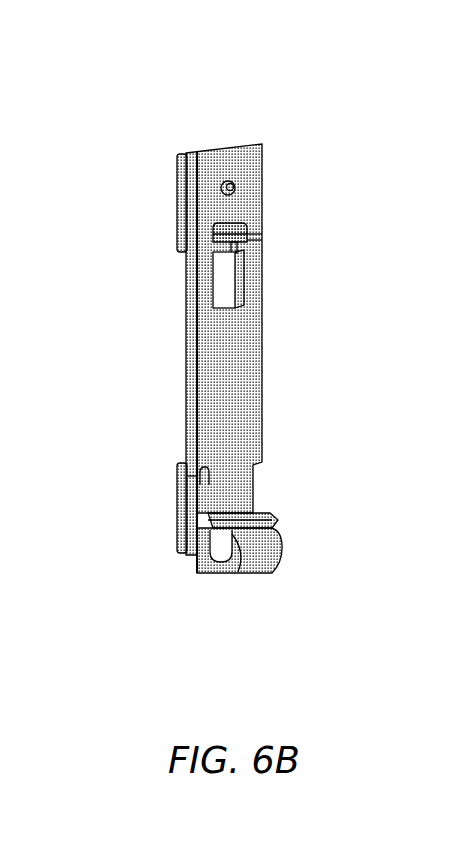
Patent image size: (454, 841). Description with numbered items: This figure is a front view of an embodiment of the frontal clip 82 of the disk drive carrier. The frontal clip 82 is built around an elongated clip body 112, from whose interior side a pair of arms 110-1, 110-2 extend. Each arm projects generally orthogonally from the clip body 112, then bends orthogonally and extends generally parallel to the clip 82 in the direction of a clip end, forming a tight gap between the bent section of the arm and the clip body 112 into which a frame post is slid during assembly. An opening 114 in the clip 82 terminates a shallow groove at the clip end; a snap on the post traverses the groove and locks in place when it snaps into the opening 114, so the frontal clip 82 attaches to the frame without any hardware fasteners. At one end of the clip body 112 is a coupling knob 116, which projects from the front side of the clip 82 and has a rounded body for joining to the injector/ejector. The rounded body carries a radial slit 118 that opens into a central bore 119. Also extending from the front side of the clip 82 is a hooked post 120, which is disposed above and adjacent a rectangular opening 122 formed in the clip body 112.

The frontal clip 82 is at (453, 80).
The arm 110-1 is at (177, 225).
The arm 110-2 is at (178, 493).
The clip body 112 is at (195, 418).
The opening 114 is at (235, 185).
The coupling knob 116 is at (247, 548).
The radial slit 118 is at (272, 520).
The central bore 119 is at (203, 545).
The hooked post 120 is at (256, 242).
The rectangular opening 122 is at (228, 283).